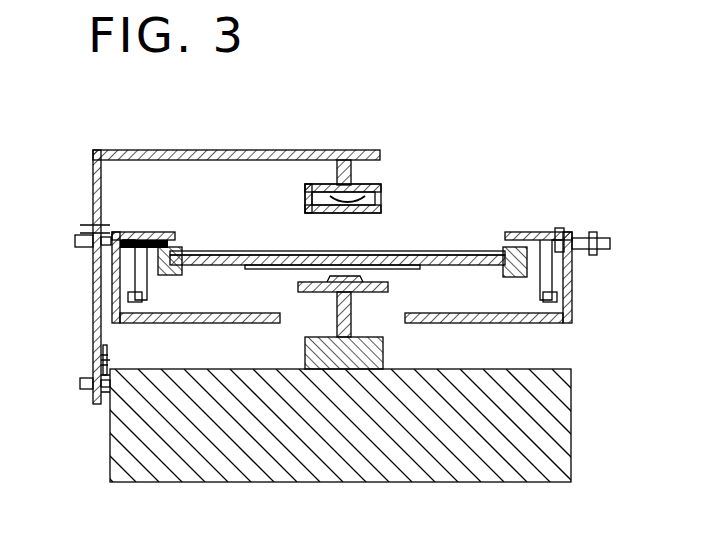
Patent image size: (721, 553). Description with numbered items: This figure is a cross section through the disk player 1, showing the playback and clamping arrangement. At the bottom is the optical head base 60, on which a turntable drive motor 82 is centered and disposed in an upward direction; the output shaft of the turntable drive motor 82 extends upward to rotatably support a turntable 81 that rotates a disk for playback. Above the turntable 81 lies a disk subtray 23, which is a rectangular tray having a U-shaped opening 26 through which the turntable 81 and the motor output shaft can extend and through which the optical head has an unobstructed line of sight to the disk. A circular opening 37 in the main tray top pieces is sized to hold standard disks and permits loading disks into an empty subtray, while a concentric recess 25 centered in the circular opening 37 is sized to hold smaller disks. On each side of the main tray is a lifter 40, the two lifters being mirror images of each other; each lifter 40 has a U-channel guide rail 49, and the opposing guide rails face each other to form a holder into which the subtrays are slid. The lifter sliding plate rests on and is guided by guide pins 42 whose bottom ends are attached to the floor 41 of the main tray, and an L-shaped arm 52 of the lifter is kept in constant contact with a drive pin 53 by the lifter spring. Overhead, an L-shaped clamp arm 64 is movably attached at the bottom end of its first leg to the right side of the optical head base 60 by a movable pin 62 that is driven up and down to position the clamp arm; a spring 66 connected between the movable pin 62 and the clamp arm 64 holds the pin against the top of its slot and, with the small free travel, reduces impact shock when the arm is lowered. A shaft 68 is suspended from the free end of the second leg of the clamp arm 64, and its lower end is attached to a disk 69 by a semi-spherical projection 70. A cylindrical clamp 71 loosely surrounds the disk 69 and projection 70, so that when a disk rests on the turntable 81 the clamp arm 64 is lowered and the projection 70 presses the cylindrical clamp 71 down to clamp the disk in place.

The apparatus 1 is at (374, 118).
The L-shaped clamp arm 64 is at (186, 151).
The shaft 68 is at (352, 172).
The disk 69 is at (383, 192).
The semi-spherical projection 70 is at (382, 200).
The cylindrical clamp 71 is at (378, 213).
The drive pin 53 is at (96, 226).
The L-shaped arm 52 is at (70, 241).
The guide pins 42 is at (130, 319).
The floor 41 is at (222, 323).
The lifter 40 is at (152, 298).
The guide rail 49 is at (170, 249).
The circular opening 37 is at (474, 250).
The disk subtray 23 is at (208, 254).
The concentric recess 25 is at (256, 254).
The U-shaped opening 26 is at (300, 269).
The turntable 81 is at (388, 286).
The turntable drive motor 82 is at (368, 358).
The optical head base 60 is at (486, 372).
The spring 66 is at (100, 360).
The movable pin 62 is at (84, 386).